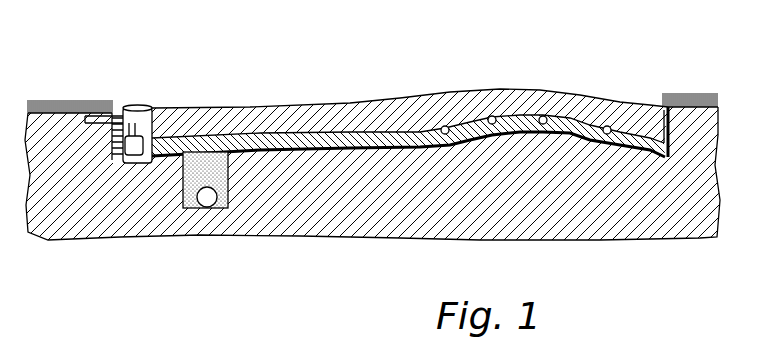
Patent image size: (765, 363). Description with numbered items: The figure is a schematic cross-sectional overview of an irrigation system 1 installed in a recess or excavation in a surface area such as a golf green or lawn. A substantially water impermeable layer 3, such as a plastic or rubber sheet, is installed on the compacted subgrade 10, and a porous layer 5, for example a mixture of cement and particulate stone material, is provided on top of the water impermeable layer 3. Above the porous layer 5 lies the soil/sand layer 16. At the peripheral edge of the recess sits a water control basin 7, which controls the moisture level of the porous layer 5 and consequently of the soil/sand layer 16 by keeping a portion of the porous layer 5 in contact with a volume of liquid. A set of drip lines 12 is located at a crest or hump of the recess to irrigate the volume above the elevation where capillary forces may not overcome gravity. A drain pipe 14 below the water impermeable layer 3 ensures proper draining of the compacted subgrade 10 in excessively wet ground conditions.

The irrigation system 1 is at (376, 140).
The water impermeable layer 3 is at (587, 146).
The porous layer 5 is at (558, 123).
The water control basin 7 is at (157, 116).
The compacted subgrade 10 is at (63, 205).
The drip lines 12 is at (446, 125).
The drain pipe 14 is at (182, 204).
The soil/sand layer 16 is at (398, 118).